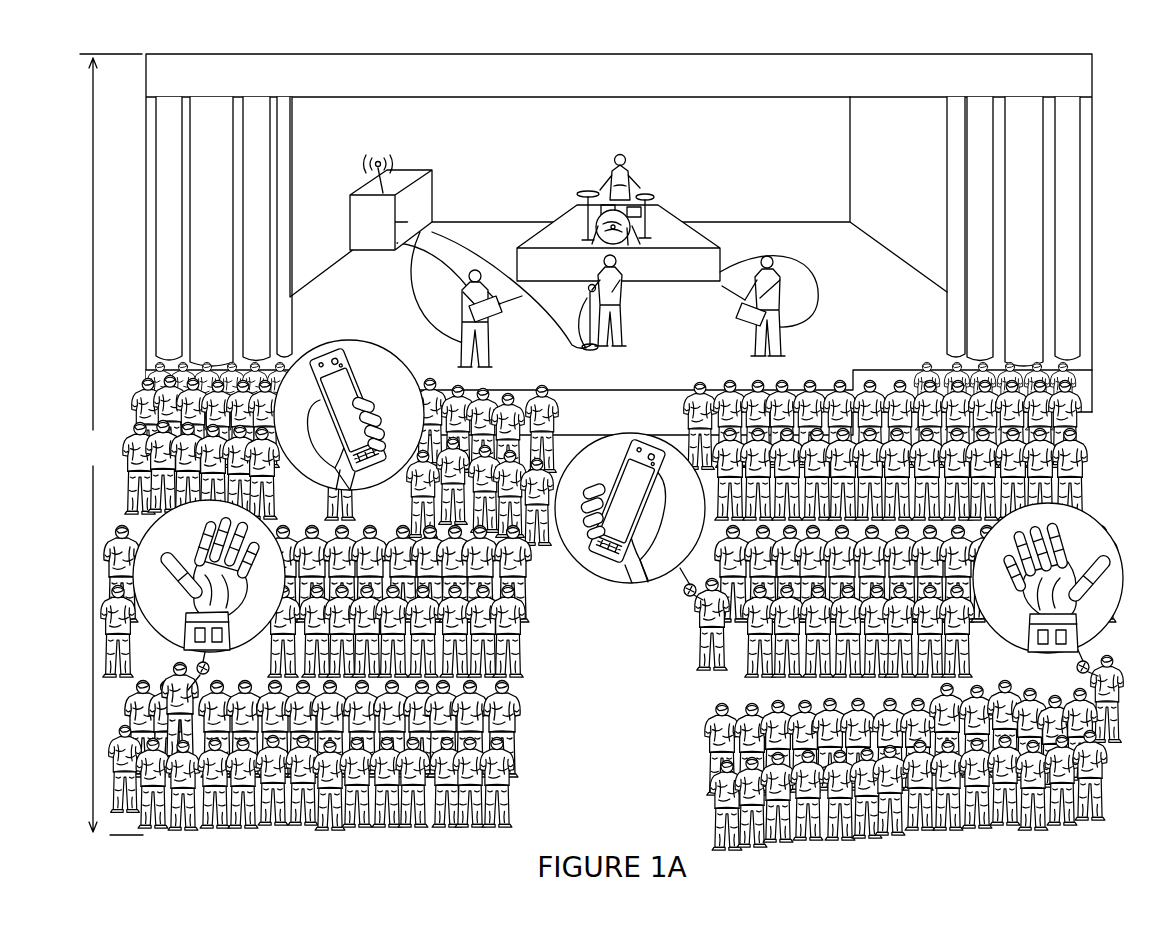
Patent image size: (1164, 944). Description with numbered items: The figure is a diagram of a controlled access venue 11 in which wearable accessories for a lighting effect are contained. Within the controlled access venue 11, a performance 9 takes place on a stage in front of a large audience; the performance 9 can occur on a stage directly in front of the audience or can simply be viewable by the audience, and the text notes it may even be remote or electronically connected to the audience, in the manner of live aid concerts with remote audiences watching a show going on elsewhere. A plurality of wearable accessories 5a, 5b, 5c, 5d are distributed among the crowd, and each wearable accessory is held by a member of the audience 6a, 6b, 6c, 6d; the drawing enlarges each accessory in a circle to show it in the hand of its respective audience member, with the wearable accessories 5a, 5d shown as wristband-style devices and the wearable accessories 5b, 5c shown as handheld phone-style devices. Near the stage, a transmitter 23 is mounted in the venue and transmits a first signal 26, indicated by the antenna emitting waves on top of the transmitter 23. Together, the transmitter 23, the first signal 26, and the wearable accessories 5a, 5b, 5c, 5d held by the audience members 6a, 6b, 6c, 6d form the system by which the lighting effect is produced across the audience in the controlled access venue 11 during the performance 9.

The controlled access venue 11 is at (111, 444).
The first signal 26 is at (371, 167).
The transmitter 23 is at (429, 181).
The performance 9 is at (761, 166).
The wearable accessory 5a is at (228, 630).
The wearable accessory 5b is at (352, 392).
The wearable accessory 5c is at (625, 490).
The wearable accessory 5d is at (1033, 628).
The member of the audience 6a is at (172, 672).
The member of the audience 6b is at (330, 468).
The member of the audience 6c is at (703, 618).
The member of the audience 6d is at (1117, 662).